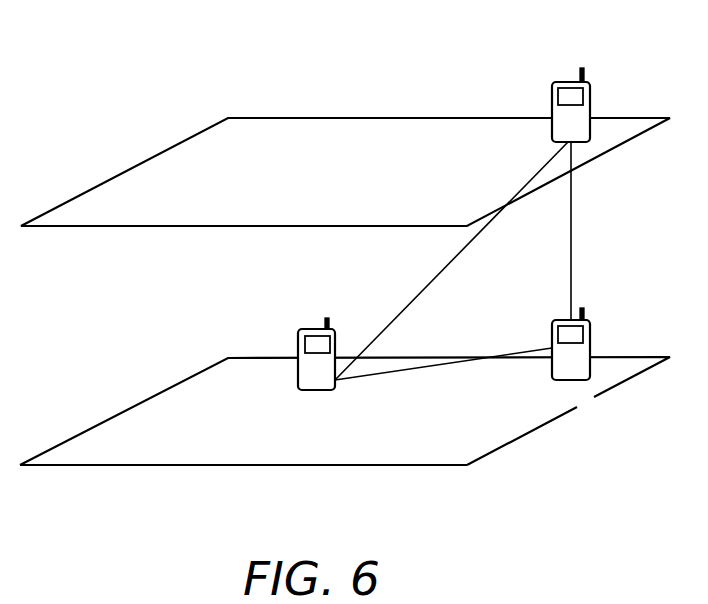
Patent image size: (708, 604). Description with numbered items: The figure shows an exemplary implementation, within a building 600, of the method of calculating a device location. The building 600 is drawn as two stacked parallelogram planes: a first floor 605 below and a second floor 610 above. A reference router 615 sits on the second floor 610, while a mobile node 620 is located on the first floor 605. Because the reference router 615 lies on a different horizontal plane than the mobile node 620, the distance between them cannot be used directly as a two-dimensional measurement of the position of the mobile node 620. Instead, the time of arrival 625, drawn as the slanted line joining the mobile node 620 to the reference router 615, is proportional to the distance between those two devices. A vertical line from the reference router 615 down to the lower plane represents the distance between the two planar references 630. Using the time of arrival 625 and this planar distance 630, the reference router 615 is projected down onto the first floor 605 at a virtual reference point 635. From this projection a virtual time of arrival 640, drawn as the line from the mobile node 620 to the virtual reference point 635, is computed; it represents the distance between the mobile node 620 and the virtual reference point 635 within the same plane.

The building 600 is at (114, 52).
The first floor 605 is at (125, 410).
The second floor 610 is at (126, 170).
The reference router 615 is at (588, 82).
The mobile node 620 is at (298, 339).
The time of arrival (TOA) 625 is at (403, 308).
The distance between the two planar references (H) 630 is at (572, 196).
The virtual reference point 635 is at (590, 330).
The virtual time of arrival (TOA') 640 is at (367, 378).